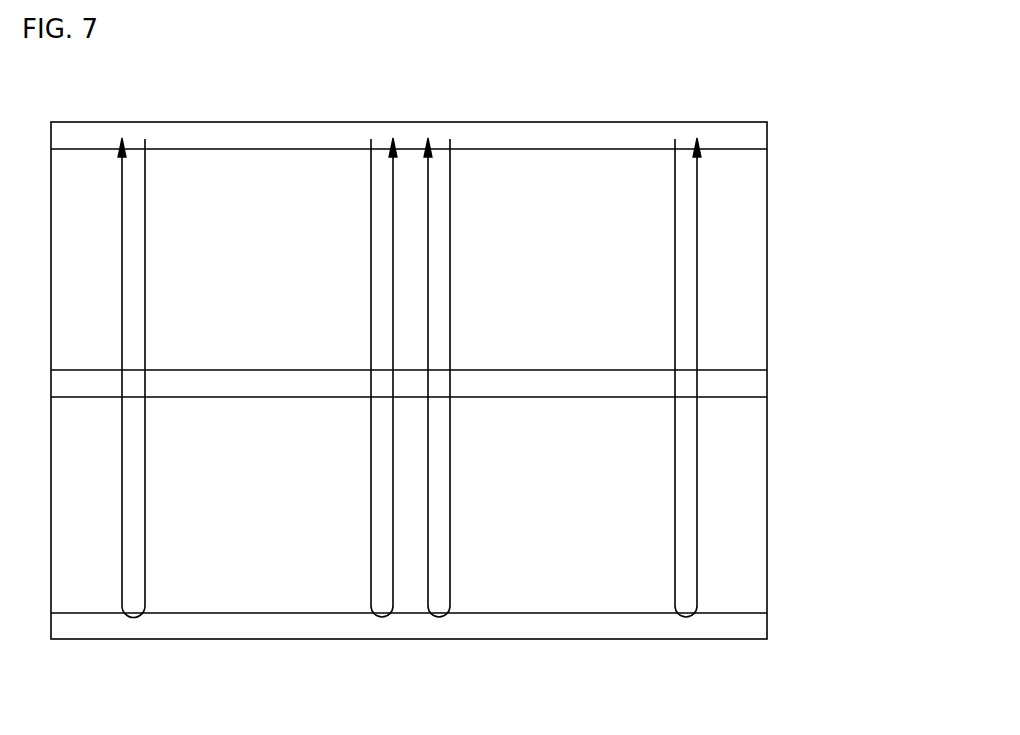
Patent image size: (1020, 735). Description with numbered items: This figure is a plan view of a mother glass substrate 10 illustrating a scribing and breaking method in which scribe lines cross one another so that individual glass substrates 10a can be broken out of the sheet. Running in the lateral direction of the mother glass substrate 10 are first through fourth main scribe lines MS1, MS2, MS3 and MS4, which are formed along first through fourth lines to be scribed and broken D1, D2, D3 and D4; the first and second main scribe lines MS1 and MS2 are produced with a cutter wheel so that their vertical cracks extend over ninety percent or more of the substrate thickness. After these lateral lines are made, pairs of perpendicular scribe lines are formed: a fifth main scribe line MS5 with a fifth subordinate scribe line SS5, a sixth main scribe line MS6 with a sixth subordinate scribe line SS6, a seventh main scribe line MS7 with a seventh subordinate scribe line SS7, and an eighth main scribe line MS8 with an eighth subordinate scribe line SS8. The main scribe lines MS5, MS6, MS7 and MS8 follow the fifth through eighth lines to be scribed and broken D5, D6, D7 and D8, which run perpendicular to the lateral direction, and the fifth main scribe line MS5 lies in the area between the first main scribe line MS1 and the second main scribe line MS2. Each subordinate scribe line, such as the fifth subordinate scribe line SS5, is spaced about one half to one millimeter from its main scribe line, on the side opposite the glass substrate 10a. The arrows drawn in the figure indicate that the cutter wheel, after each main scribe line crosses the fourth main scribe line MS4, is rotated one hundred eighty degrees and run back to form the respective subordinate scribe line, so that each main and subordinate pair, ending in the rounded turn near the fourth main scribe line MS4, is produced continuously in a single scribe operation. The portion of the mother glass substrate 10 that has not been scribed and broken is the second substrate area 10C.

The mother glass substrate 10 is at (783, 300).
The glass substrate 10a is at (222, 580).
The second substrate area 10C is at (752, 565).
The first line to be scribed and broken D1 is at (467, 137).
The second line to be scribed and broken D2 is at (469, 343).
The third line to be scribed and broken D3 is at (469, 430).
The fourth line to be scribed and broken D4 is at (465, 602).
The fifth line to be scribed and broken D5 is at (172, 330).
The sixth line to be scribed and broken D6 is at (346, 328).
The seventh line to be scribed and broken D7 is at (483, 328).
The eighth line to be scribed and broken D8 is at (644, 328).
The first main scribe line MS1 is at (755, 147).
The second main scribe line MS2 is at (752, 370).
The third main scribe line MS3 is at (743, 397).
The fourth main scribe line MS4 is at (757, 610).
The fifth main scribe line MS5 is at (145, 190).
The sixth main scribe line MS6 is at (370, 190).
The seventh main scribe line MS7 is at (449, 190).
The eighth main scribe line MS8 is at (674, 190).
The fifth subordinate scribe line SS5 is at (119, 190).
The sixth subordinate scribe line SS6 is at (393, 580).
The seventh subordinate scribe line SS7 is at (427, 190).
The eighth subordinate scribe line SS8 is at (698, 578).